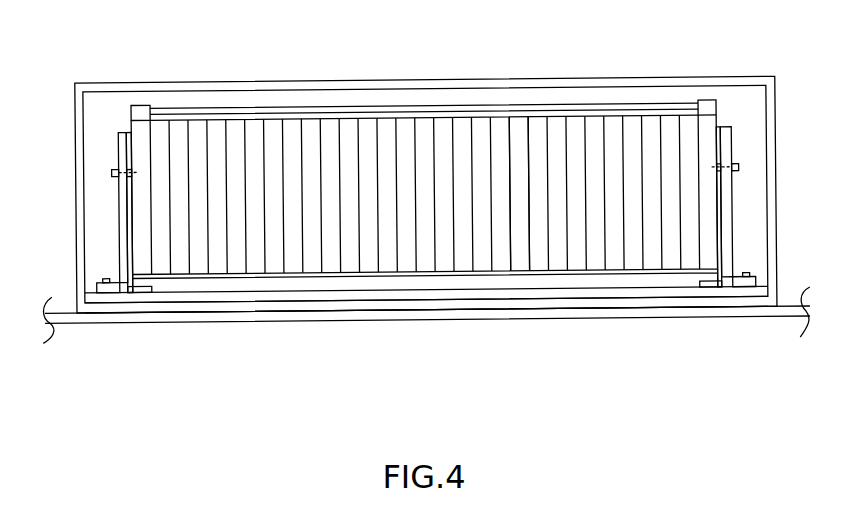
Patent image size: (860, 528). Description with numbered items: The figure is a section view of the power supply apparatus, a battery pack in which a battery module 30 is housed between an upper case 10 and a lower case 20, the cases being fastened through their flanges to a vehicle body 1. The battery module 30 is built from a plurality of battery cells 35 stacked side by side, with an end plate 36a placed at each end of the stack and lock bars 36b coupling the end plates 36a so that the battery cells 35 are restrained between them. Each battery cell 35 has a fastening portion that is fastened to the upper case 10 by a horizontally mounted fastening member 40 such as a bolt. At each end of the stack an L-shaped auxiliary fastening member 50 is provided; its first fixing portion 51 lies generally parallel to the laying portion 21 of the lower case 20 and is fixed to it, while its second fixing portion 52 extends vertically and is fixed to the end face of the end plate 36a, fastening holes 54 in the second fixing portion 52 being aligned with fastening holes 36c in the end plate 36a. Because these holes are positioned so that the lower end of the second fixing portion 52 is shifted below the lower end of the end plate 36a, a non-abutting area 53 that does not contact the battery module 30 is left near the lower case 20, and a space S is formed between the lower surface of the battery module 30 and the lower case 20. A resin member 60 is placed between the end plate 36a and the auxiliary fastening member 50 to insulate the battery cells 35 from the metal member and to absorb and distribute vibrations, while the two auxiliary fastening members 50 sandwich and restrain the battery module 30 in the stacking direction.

The vehicle body 1 is at (63, 318).
The upper case 10 is at (77, 233).
The lower case 20 is at (298, 307).
The laying portion 21 is at (355, 292).
The battery module 30 is at (434, 193).
The battery cell 35 is at (655, 122).
The end plate 36a is at (143, 107).
The lock bar 36b is at (185, 110).
The fastening hole 36c is at (123, 172).
The fastening member 40 is at (113, 173).
The auxiliary fastening member 50 is at (422, 193).
The first fixing portion 51 is at (107, 290).
The second fixing portion 52 is at (122, 190).
The non-abutting area 53 is at (136, 287).
The fastening hole 54 is at (118, 168).
The resin member 60 is at (132, 163).
The space S is at (527, 286).